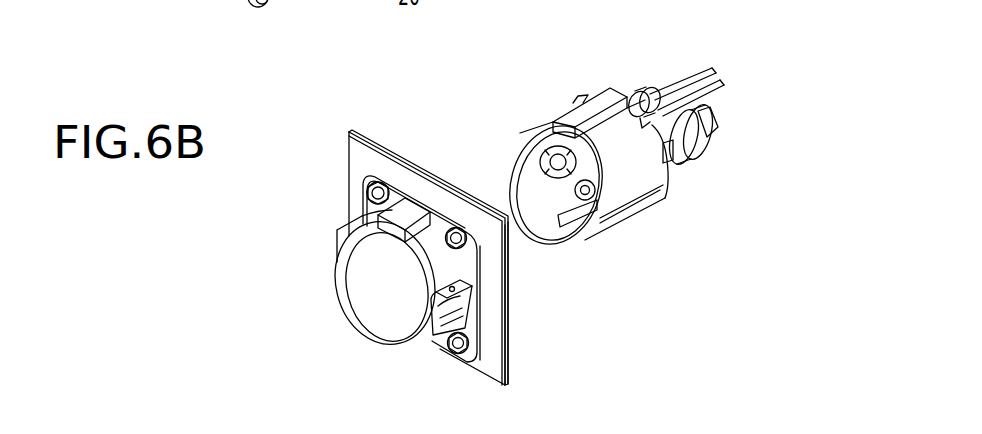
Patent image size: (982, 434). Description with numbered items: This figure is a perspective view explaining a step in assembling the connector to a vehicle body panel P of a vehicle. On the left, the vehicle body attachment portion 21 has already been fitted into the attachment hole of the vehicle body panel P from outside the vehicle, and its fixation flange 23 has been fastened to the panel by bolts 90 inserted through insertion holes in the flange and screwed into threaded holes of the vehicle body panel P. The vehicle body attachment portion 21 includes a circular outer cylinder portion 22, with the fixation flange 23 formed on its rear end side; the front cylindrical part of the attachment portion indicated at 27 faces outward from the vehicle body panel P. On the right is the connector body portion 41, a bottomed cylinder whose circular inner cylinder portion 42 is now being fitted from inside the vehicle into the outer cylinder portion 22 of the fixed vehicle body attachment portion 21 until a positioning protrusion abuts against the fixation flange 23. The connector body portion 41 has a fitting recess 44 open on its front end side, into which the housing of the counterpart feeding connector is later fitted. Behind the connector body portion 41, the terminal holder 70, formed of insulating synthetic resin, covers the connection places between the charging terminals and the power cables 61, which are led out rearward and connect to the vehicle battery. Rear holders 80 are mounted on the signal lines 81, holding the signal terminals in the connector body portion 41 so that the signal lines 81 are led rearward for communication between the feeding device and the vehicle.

The vehicle body panel P is at (352, 153).
The vehicle body attachment portion 21 is at (380, 170).
The outer cylinder portion 22 is at (506, 328).
The fixation flange 23 is at (404, 193).
The cylindrical portion 27 is at (372, 294).
The connector body portion 41 is at (595, 87).
The inner cylinder portion 42 is at (600, 235).
The fitting recess 44 is at (557, 213).
The power cables 61 is at (715, 113).
The terminal holder 70 is at (675, 167).
The rear holders 80 is at (632, 90).
The signal lines 81 is at (686, 100).
The bolts 90 is at (367, 195).